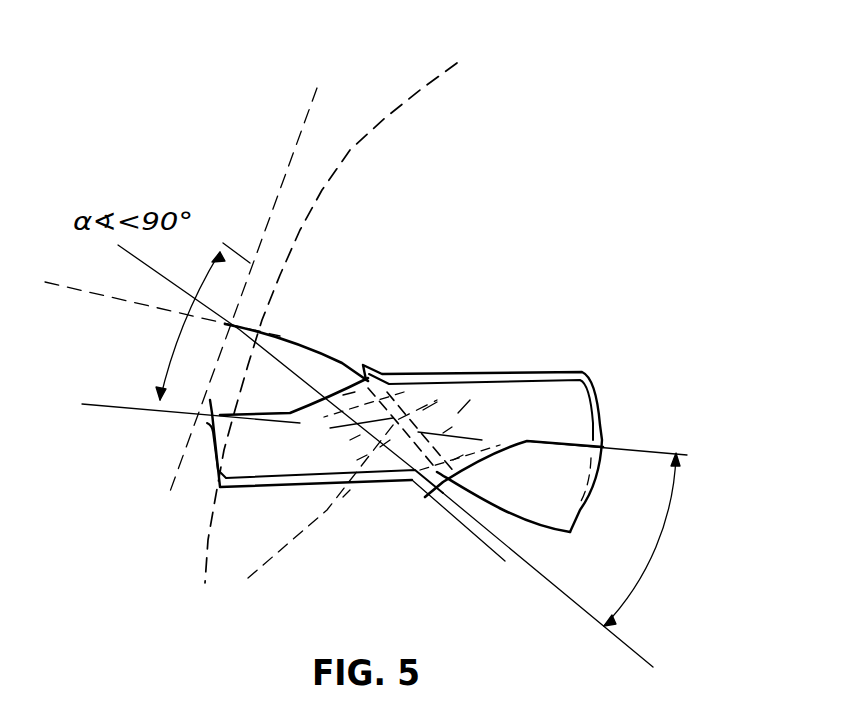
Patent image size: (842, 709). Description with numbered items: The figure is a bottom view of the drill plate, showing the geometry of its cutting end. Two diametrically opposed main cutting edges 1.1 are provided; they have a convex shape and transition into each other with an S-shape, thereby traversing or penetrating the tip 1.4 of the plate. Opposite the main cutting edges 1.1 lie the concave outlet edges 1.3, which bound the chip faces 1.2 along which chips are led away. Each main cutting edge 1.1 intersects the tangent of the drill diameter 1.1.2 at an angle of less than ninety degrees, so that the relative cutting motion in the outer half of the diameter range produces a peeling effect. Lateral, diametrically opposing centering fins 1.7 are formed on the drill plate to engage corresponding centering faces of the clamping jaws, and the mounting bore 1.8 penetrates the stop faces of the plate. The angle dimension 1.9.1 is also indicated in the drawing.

The main cutting edge 1.1 is at (260, 413).
The drill diameter 1.1.2 is at (420, 90).
The chip face 1.2 is at (302, 380).
The concave outlet edge 1.3 is at (302, 380).
The tip 1.4 is at (410, 412).
The centering fin 1.7 is at (367, 365).
The mounting bore 1.8 is at (248, 578).
The angle 1.9.1 is at (183, 333).